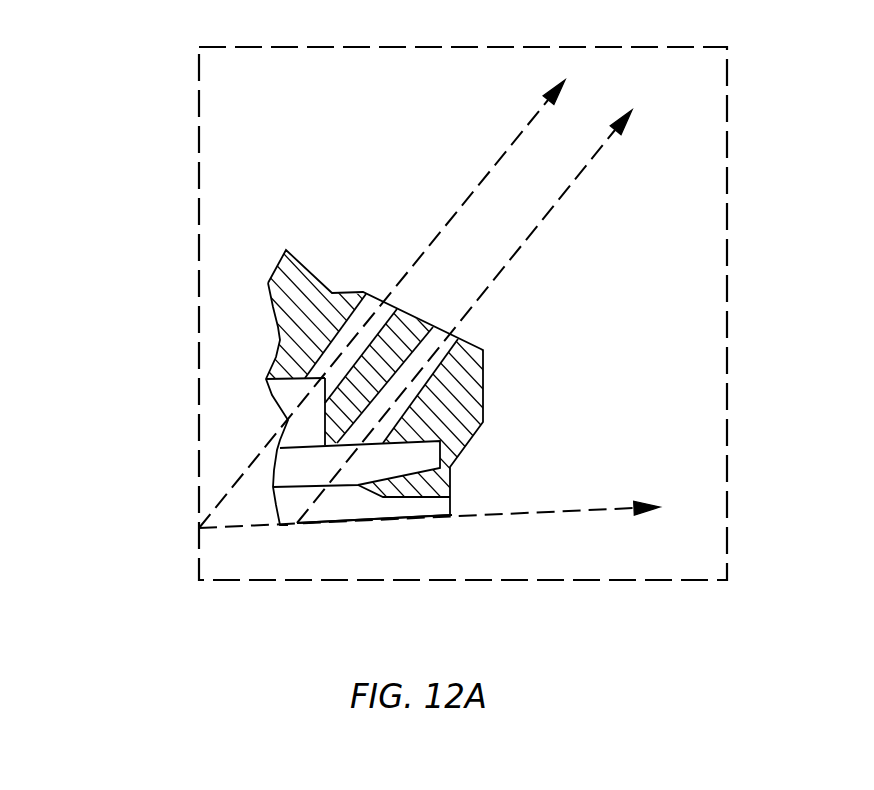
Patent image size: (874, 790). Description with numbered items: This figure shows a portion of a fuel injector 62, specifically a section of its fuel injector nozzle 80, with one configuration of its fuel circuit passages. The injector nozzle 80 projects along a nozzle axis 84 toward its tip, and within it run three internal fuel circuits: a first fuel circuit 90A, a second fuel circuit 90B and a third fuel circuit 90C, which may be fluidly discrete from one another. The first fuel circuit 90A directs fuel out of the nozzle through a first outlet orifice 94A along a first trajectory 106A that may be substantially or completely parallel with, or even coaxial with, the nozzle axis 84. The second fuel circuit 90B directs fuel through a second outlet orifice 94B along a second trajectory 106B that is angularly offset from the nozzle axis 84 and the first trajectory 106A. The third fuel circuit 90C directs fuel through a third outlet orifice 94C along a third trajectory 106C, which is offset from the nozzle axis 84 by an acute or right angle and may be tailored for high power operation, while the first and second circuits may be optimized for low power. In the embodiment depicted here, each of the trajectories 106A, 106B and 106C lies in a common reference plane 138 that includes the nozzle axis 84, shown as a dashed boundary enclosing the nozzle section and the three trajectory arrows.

The fuel injector 62 is at (312, 144).
The fuel injector nozzle 80 is at (403, 421).
The nozzle axis 84 is at (327, 525).
The first fuel circuit 90A is at (262, 510).
The second fuel circuit 90B is at (262, 472).
The third fuel circuit 90C is at (262, 410).
The first outlet orifice 94A is at (453, 508).
The second outlet orifice 94B is at (458, 338).
The third outlet orifice 94C is at (372, 297).
The first trajectory 106A is at (578, 508).
The second trajectory 106B is at (549, 212).
The third trajectory 106C is at (486, 181).
The reference plane 138 is at (727, 101).